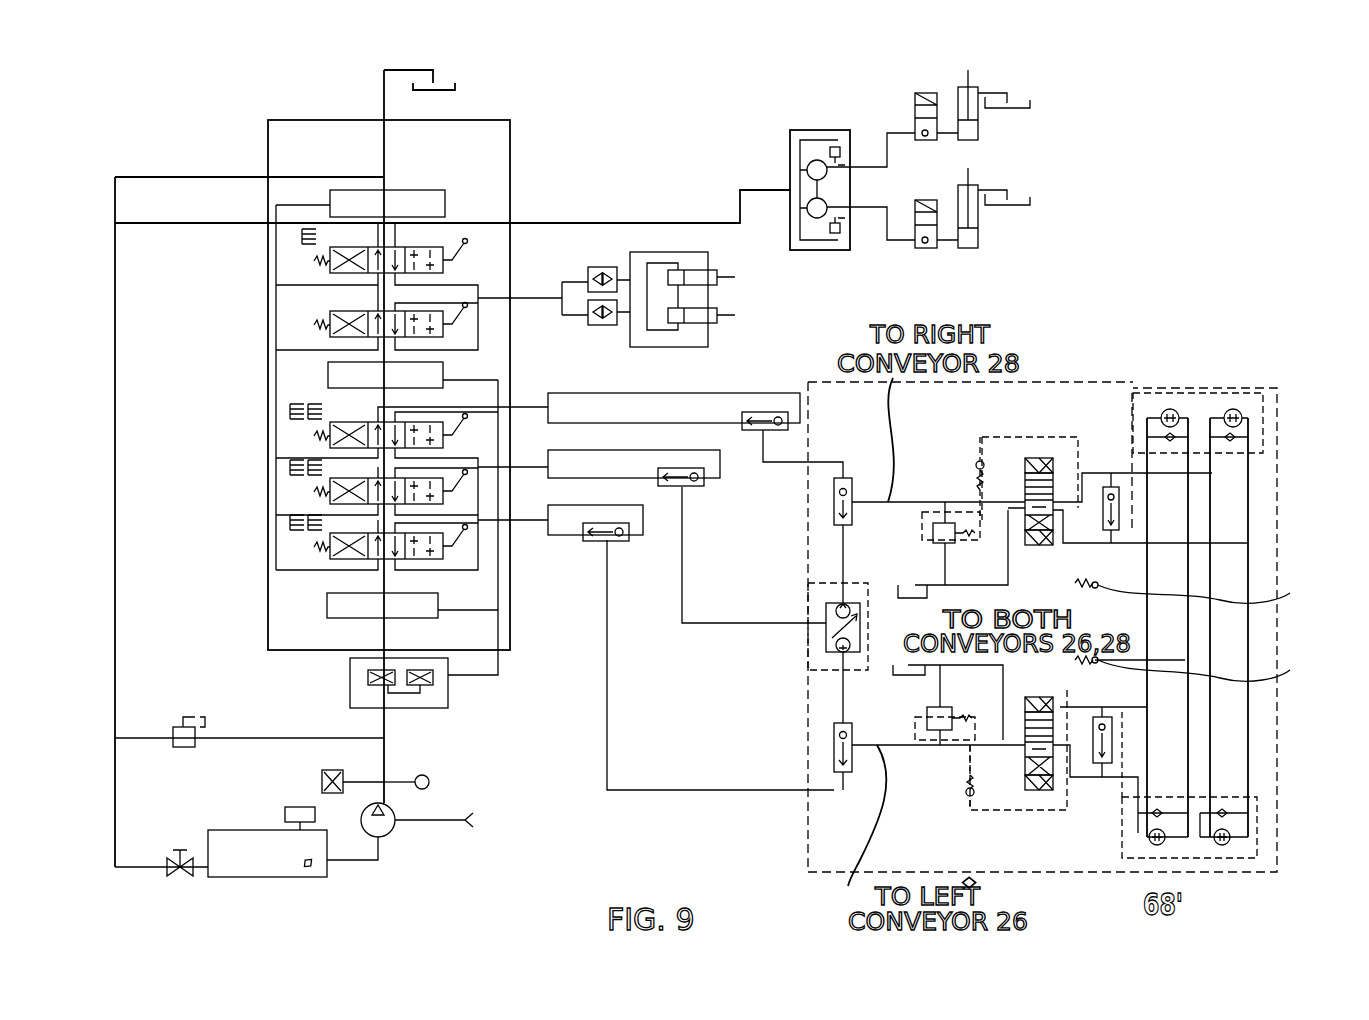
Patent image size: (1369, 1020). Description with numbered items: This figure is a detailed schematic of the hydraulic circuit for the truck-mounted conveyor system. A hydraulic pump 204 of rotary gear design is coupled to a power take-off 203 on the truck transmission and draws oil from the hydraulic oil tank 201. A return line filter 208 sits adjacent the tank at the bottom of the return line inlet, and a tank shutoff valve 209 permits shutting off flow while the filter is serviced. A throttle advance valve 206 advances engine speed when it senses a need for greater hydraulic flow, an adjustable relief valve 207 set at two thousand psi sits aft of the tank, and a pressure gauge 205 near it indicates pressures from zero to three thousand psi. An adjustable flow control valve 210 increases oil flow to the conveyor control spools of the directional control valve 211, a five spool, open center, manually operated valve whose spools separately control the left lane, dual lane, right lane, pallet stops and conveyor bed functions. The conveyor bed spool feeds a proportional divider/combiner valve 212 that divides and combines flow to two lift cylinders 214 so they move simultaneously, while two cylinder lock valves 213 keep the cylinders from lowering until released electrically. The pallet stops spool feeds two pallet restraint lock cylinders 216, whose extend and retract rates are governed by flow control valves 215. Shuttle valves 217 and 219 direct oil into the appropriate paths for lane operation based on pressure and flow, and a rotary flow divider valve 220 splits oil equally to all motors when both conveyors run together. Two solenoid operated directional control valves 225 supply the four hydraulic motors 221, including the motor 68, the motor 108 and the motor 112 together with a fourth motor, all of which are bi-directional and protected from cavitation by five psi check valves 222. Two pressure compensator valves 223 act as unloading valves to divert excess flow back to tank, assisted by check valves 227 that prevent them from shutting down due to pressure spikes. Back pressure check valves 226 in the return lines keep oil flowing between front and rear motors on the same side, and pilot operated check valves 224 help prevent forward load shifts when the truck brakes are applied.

The hydraulic motor 68 is at (1160, 412).
The hydraulic motor 108 is at (1262, 365).
The hydraulic motor 112 is at (1245, 830).
The hydraulic oil tank 201 is at (300, 877).
The power take-off (PTO) 203 is at (545, 830).
The hydraulic pump 204 is at (390, 833).
The pressure gauge 205 is at (422, 789).
The throttle advance valve 206 is at (328, 770).
The adjustable relief valve 207 is at (178, 747).
The return line filter 208 is at (140, 875).
The tank shutoff valve 209 is at (185, 878).
The adjustable flow control valve 210 is at (448, 690).
The directional control valve 211 is at (268, 625).
The proportional divider/combiner valve 212 is at (845, 130).
The cylinder lock valve 213 is at (920, 93).
The lift cylinder 214 is at (978, 87).
The flow control valve 215 is at (603, 267).
The pallet restraint lock cylinder 216 is at (735, 277).
The shuttle valve 217 is at (755, 432).
The shuttle valve 219 is at (858, 478).
The rotary flow divider valve 220 is at (806, 593).
The hydraulic motor 221 is at (1208, 392).
The check valve 222 is at (1225, 455).
The pressure compensator valve 223 is at (930, 707).
The pilot operated check valve 224 is at (1125, 712).
The directional control valve 225 is at (1060, 548).
The back pressure check valve 226 is at (1290, 593).
The check valve 227 is at (975, 463).